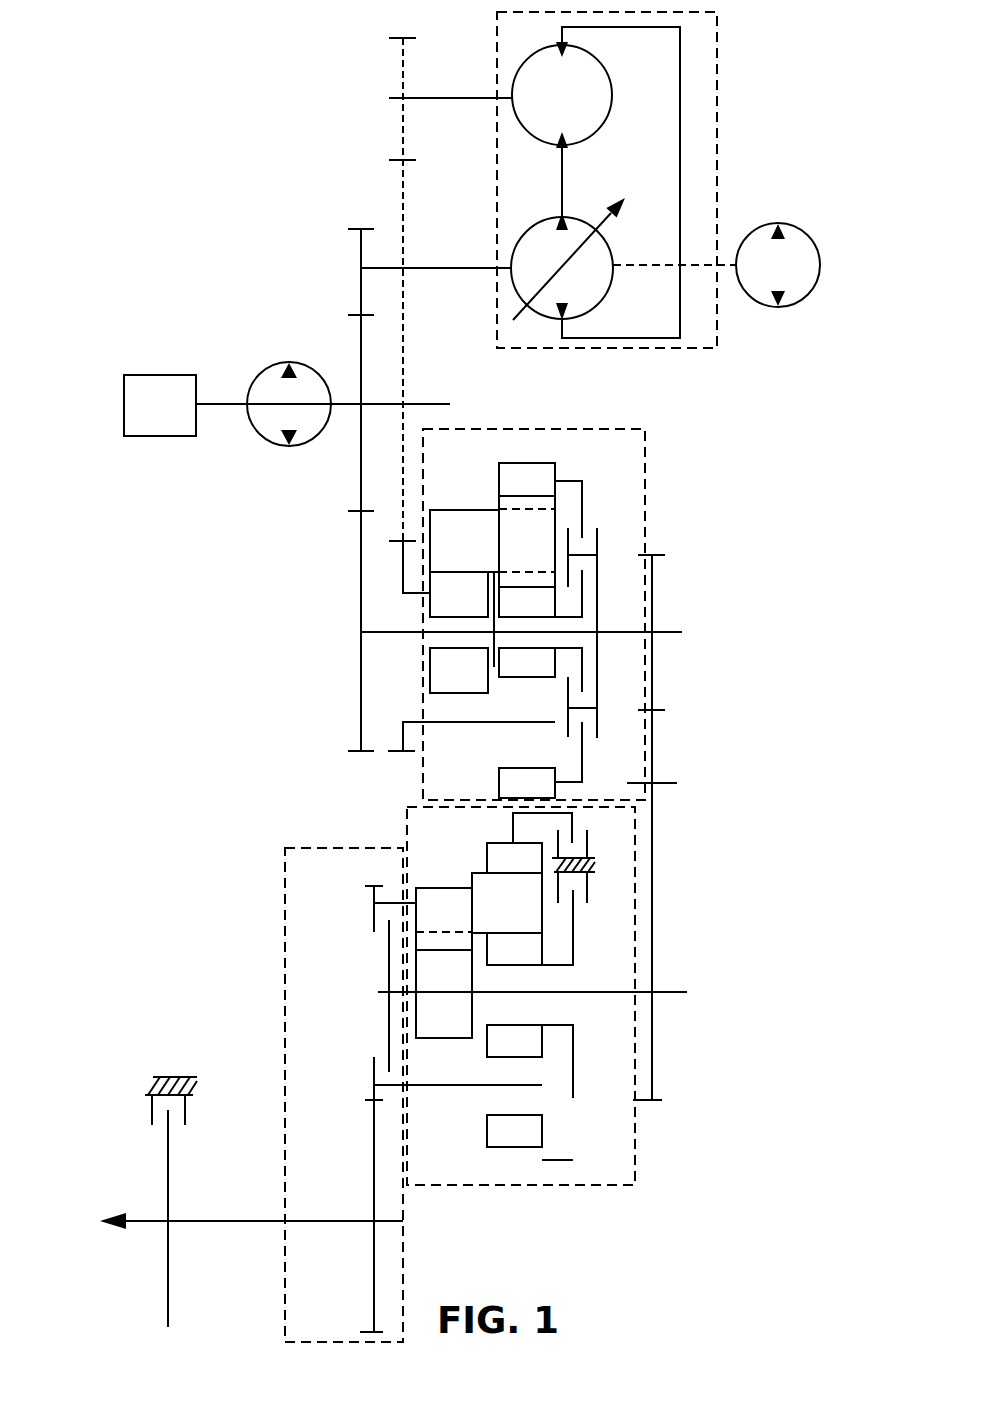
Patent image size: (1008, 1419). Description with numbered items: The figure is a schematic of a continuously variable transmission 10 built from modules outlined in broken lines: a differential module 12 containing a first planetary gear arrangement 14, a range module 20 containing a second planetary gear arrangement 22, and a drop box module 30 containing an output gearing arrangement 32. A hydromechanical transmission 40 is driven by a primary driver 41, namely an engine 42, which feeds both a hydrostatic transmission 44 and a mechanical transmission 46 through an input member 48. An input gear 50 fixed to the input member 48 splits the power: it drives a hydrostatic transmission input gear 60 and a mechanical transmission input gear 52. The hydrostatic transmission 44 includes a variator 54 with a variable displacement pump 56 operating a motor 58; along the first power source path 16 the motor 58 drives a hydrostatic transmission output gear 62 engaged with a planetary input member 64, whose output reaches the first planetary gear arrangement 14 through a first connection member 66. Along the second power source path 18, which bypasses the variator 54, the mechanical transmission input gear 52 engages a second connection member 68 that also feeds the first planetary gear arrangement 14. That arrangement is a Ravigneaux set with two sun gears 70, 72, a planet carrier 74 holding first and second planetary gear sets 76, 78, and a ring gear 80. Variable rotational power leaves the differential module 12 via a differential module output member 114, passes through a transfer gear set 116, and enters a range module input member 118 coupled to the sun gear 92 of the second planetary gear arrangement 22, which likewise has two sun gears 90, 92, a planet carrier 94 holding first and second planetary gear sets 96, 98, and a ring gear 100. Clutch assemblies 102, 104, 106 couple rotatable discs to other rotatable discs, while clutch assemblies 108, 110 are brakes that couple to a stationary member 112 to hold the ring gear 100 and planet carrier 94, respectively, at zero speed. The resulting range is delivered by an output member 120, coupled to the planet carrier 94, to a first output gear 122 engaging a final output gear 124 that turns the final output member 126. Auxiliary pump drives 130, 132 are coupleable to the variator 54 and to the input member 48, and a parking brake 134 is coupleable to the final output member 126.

The continuously variable transmission 10 is at (461, 674).
The differential module 12 is at (585, 428).
The first planetary gear arrangement 14 is at (581, 456).
The first power source path 16 is at (386, 201).
The second power source path 18 is at (336, 532).
The range module 20 is at (403, 823).
The second planetary gear arrangement 22 is at (411, 860).
The drop box module 30 is at (285, 882).
The output gearing arrangement 32 is at (304, 1132).
The hydromechanical transmission 40 is at (303, 456).
The primary driver 41 is at (139, 457).
The engine 42 is at (144, 420).
The hydrostatic transmission 44 is at (740, 123).
The mechanical transmission 46 is at (675, 489).
The input member 48 is at (228, 404).
The input gear 50 is at (360, 380).
The mechanical transmission input gear 52 is at (358, 612).
The variator 54 is at (497, 70).
The variable displacement pump 56 is at (607, 304).
The motor 58 is at (603, 137).
The hydrostatic transmission input gear 60 is at (360, 293).
The hydrostatic transmission output gear 62 is at (400, 73).
The planetary input member 64 is at (414, 348).
The first connection member 66 is at (410, 597).
The second connection member 68 is at (368, 634).
The sun gear 70 is at (442, 613).
The sun gear 72 is at (511, 619).
The planet carrier 74 is at (444, 563).
The first planetary gear set 76 is at (450, 510).
The second planetary gear set 78 is at (499, 501).
The ring gear 80 is at (511, 495).
The sun gear 90 is at (498, 962).
The sun gear 92 is at (429, 990).
The planet carrier 94 is at (498, 918).
The first planetary gear set 96 is at (486, 871).
The second planetary gear set 98 is at (438, 885).
The ring gear 100 is at (491, 871).
The clutch assembly 102 is at (588, 537).
The clutch assembly 104 is at (590, 562).
The clutch assembly 106 is at (384, 926).
The clutch assembly 108 is at (574, 892).
The clutch assembly 110 is at (577, 846).
The stationary member 112 is at (596, 860).
The differential module output member 114 is at (668, 631).
The transfer gear set 116 is at (654, 723).
The range module input member 118 is at (666, 991).
The output member 120 is at (394, 899).
The first output gear 122 is at (372, 893).
The final output gear 124 is at (373, 1172).
The final output member 126 is at (313, 1221).
The auxiliary pump drive 130 is at (820, 268).
The auxiliary pump drive 132 is at (272, 362).
The parking brake 134 is at (120, 1082).